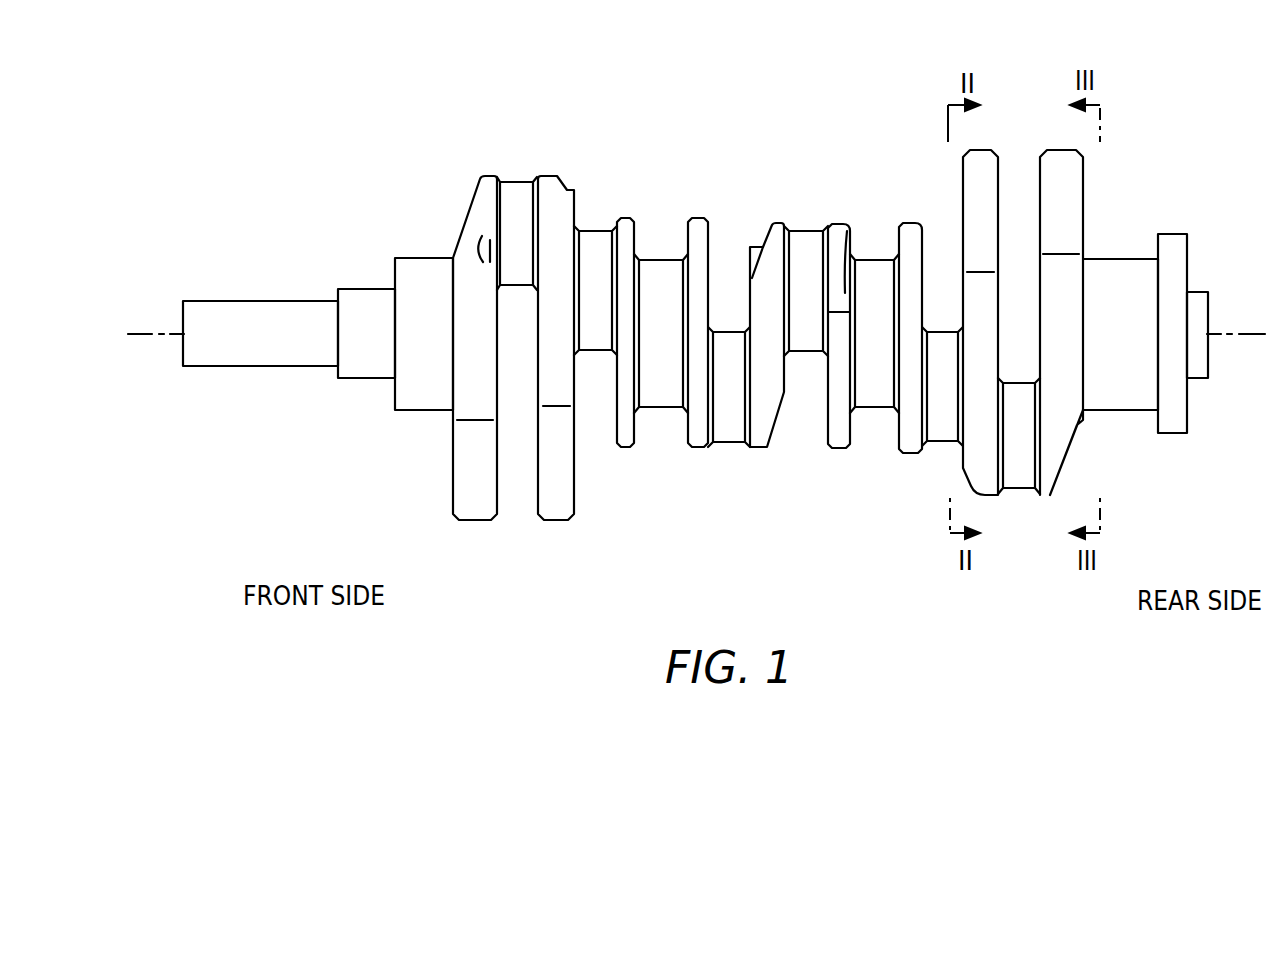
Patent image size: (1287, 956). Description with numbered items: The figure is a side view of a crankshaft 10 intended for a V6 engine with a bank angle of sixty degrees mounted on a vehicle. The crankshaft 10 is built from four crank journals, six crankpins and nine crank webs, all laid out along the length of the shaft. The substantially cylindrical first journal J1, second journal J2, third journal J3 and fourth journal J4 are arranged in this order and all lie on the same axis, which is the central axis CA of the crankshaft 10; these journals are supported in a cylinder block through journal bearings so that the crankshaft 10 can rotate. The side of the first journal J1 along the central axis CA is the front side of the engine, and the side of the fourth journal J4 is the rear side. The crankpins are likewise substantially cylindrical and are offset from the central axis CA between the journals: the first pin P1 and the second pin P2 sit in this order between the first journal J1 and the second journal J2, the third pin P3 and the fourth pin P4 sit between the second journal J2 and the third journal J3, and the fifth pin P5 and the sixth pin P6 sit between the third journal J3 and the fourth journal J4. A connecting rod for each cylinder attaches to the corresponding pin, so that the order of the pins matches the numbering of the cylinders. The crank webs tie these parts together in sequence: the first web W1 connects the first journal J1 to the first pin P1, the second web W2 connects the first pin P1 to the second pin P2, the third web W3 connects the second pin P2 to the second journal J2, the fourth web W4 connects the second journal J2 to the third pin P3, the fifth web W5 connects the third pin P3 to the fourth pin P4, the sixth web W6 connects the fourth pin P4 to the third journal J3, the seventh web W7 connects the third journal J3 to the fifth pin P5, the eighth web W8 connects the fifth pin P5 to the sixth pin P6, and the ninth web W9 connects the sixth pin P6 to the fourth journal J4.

The crankshaft 10 is at (393, 131).
The central axis CA is at (140, 333).
The first journal J1 is at (423, 257).
The second journal J2 is at (661, 259).
The third journal J3 is at (875, 259).
The fourth journal J4 is at (1132, 258).
The first pin P1 is at (515, 181).
The second pin P2 is at (592, 230).
The third pin P3 is at (725, 331).
The fourth pin P4 is at (807, 230).
The fifth pin P5 is at (935, 331).
The sixth pin P6 is at (1013, 382).
The first web W1 is at (475, 520).
The second web W2 is at (558, 520).
The third web W3 is at (628, 447).
The fourth web W4 is at (697, 447).
The fifth web W5 is at (760, 447).
The sixth web W6 is at (840, 448).
The seventh web W7 is at (910, 453).
The eighth web W8 is at (987, 495).
The ninth web W9 is at (1050, 495).